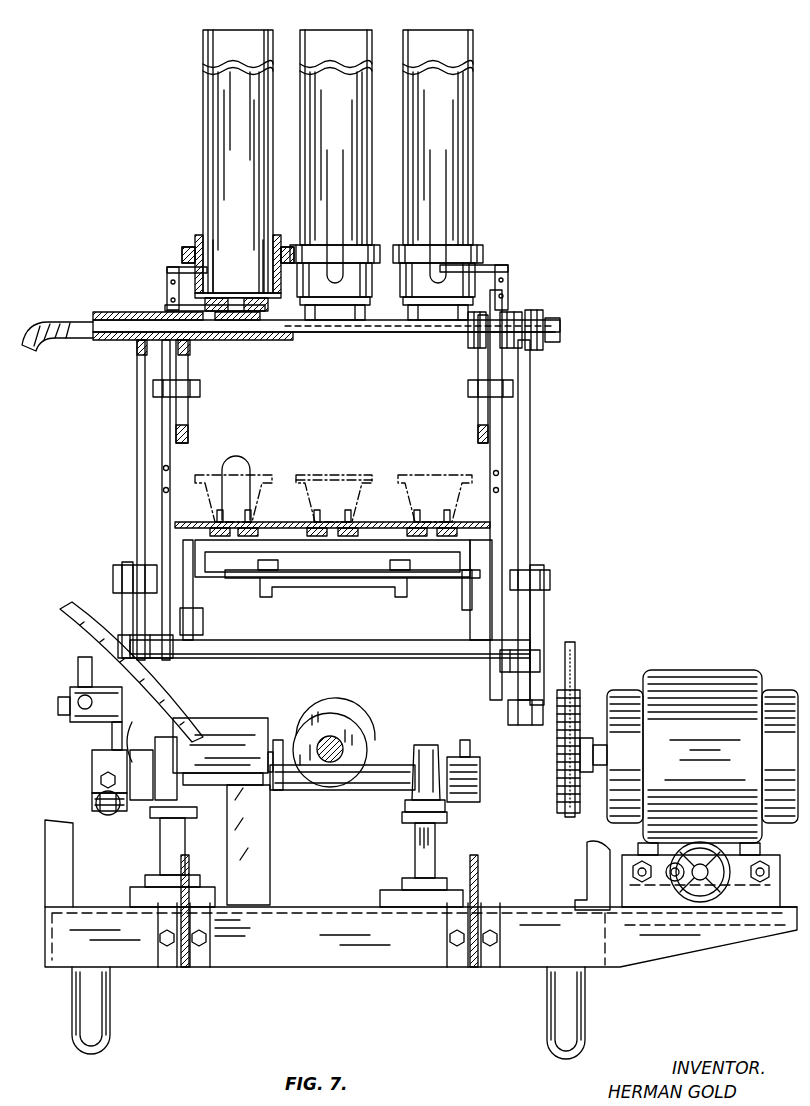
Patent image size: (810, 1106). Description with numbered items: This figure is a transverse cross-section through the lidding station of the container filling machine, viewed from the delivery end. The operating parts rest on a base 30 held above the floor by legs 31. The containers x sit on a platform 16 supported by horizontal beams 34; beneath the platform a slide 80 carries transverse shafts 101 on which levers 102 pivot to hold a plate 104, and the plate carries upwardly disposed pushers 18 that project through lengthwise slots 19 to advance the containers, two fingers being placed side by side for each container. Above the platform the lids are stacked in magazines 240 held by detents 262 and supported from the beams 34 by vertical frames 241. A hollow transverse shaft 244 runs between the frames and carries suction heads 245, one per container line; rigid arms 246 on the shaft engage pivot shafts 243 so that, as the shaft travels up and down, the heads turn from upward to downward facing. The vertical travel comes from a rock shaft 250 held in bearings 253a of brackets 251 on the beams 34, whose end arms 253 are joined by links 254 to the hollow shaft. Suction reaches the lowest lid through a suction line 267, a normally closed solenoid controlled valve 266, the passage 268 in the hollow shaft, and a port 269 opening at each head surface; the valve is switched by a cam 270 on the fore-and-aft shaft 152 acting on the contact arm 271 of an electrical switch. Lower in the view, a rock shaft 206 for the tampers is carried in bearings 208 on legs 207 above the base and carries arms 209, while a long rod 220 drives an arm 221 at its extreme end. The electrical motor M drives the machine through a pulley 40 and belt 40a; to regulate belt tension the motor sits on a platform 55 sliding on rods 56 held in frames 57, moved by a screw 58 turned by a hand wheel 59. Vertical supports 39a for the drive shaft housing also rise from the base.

The magazines 240 is at (418, 30).
The vertical frames 241 is at (167, 288).
The pivot shafts 243 is at (200, 388).
The hollow transverse shaft 244 is at (297, 340).
The suction heads 245 is at (208, 285).
The arms 246 is at (188, 428).
The rock shaft 250 is at (404, 648).
The brackets 251 is at (203, 596).
The arms 253 is at (122, 598).
The bearings 253a is at (160, 668).
The links 254 is at (137, 462).
The detents 262 is at (210, 270).
The solenoid controlled valve 266 is at (218, 718).
The suction line 267 is at (68, 612).
The passage 268 is at (248, 335).
The port 269 is at (252, 285).
The cam 270 is at (328, 713).
The contact arm 271 is at (276, 740).
The platform 16 is at (385, 500).
The pushers 18 is at (236, 466).
The slots 19 is at (350, 520).
The containers x is at (268, 485).
The beams 34 is at (492, 525).
The slide 80 is at (332, 590).
The transverse shafts 101 is at (225, 572).
The levers 102 is at (260, 572).
The plate 104 is at (380, 548).
The fore-and-aft shaft 152 is at (345, 750).
The rock shaft 206 is at (332, 790).
The legs 207 is at (438, 858).
The bearings 208 is at (424, 745).
The arms 209 is at (480, 776).
The rod 220 is at (78, 670).
The arm 221 is at (112, 740).
The base 30 is at (388, 967).
The legs 31 is at (548, 1015).
The vertical supports 39a is at (597, 805).
The pulley 40 is at (580, 690).
The belt 40a is at (575, 650).
The electrical motor M is at (692, 672).
The platform 55 is at (772, 865).
The rods 56 is at (758, 882).
The frames 57 is at (765, 900).
The screw 58 is at (700, 864).
The hand wheel 59 is at (680, 862).